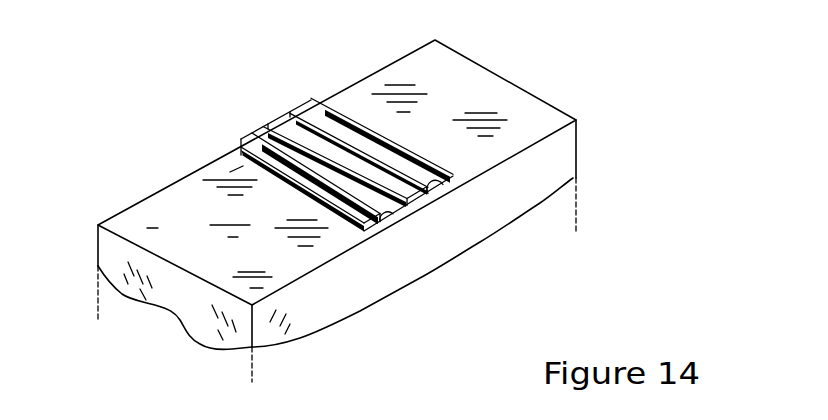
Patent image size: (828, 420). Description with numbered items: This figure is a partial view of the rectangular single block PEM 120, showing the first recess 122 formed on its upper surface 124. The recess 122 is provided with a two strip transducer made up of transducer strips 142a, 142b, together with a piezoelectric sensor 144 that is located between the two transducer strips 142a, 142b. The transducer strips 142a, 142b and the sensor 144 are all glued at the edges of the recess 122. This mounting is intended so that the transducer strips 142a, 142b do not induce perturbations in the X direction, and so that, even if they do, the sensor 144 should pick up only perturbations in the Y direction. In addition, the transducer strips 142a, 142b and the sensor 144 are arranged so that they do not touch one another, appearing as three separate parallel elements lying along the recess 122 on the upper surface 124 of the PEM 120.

The rectangular single block PEM 120 is at (626, 125).
The first recess 122 is at (230, 172).
The upper surface 124 is at (423, 63).
The piezoelectric sensor 144 is at (284, 117).
The transducer strip 142a is at (386, 224).
The transducer strip 142b is at (447, 190).